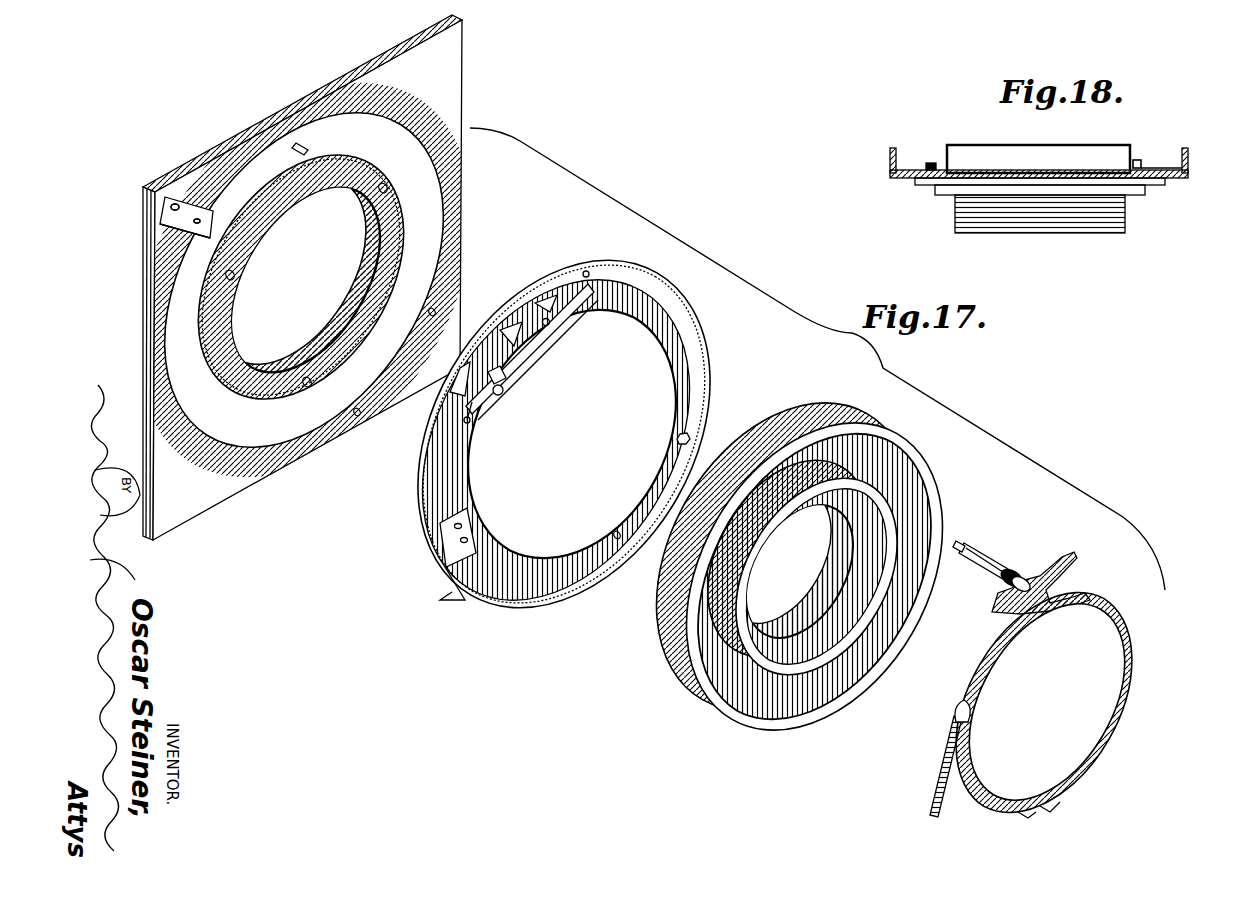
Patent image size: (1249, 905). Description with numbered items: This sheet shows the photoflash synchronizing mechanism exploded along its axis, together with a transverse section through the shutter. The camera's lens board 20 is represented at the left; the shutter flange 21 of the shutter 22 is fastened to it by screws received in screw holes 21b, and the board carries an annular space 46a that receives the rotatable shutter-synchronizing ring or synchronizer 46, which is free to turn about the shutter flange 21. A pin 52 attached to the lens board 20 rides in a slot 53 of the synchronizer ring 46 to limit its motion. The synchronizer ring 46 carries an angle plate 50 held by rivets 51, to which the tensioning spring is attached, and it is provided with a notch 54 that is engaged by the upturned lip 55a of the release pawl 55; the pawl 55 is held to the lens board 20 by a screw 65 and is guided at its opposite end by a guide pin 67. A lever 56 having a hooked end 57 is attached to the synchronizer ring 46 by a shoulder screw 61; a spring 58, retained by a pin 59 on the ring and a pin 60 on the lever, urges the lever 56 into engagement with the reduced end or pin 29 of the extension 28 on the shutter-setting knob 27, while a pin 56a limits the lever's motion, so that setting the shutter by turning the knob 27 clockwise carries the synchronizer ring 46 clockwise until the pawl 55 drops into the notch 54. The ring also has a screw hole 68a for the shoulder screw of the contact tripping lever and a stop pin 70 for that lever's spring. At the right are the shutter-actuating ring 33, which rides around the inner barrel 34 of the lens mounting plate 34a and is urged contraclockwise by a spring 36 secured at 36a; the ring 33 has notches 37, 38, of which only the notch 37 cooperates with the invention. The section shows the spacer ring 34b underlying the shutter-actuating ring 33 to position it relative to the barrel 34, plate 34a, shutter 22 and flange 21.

In FIG. 17, the lens board 20 is at (450, 62).
In FIG. 18, the shutter flange 21 is at (1134, 192).
In FIG. 17, the screw holes 21b is at (379, 192).
In FIG. 17, the shutter 22 is at (900, 438).
In FIG. 18, the shutter 22 is at (1190, 166).
In FIG. 17, the shutter-setting knob 27 is at (1008, 587).
In FIG. 17, the extension 28 is at (990, 561).
In FIG. 17, the reduced end or pin 29 is at (961, 546).
In FIG. 17, the shutter-actuating ring 33 is at (1094, 610).
In FIG. 18, the shutter-actuating ring 33 is at (1138, 162).
In FIG. 17, the inner barrel 34 is at (893, 503).
In FIG. 18, the inner barrel 34 is at (1001, 152).
In FIG. 17, the lens mounting plate 34a is at (902, 463).
In FIG. 18, the lens mounting plate 34a is at (1166, 170).
In FIG. 18, the spacer ring 34b is at (928, 166).
In FIG. 17, the spring 36 is at (940, 760).
In FIG. 17, the spring securing point 36a is at (966, 684).
In FIG. 17, the notch 37 is at (1032, 814).
In FIG. 17, the notch 38 is at (1052, 808).
In FIG. 17, the shutter-synchronizing ring 46 is at (688, 312).
In FIG. 17, the annular space 46a is at (263, 393).
In FIG. 17, the angle plate 50 is at (472, 528).
In FIG. 17, the rivets 51 is at (462, 524).
In FIG. 17, the pin 52 is at (312, 150).
In FIG. 17, the slot 53 is at (587, 272).
In FIG. 17, the notch 54 is at (462, 385).
In FIG. 17, the release pawl 55 is at (166, 221).
In FIG. 17, the upturned lip 55a is at (172, 246).
In FIG. 17, the lever 56 is at (535, 343).
In FIG. 17, the pin 56a is at (512, 334).
In FIG. 17, the hooked end 57 is at (548, 300).
In FIG. 17, the spring 58 is at (504, 383).
In FIG. 17, the pin 59 is at (463, 422).
In FIG. 17, the pin 60 is at (552, 322).
In FIG. 17, the shoulder screw 61 is at (500, 394).
In FIG. 17, the screw 65 is at (176, 203).
In FIG. 17, the guide pin 67 is at (198, 218).
In FIG. 17, the screw hole 68a is at (617, 541).
In FIG. 17, the stop pin 70 is at (690, 438).